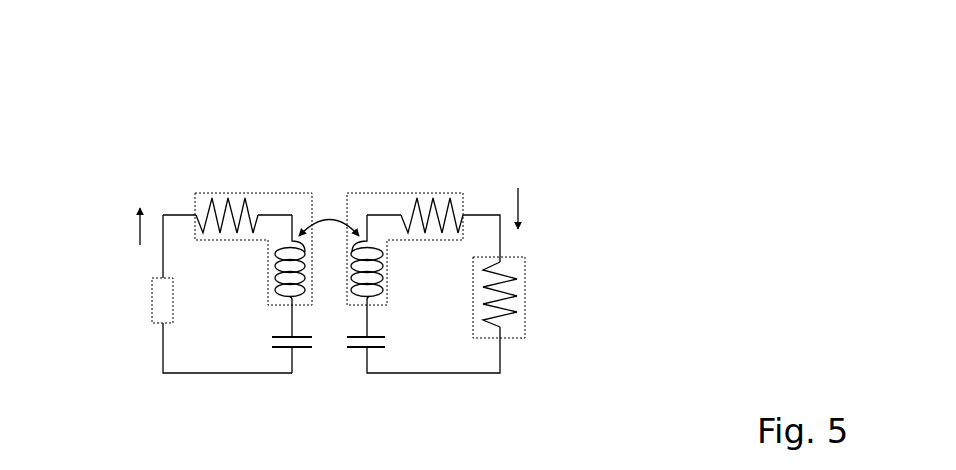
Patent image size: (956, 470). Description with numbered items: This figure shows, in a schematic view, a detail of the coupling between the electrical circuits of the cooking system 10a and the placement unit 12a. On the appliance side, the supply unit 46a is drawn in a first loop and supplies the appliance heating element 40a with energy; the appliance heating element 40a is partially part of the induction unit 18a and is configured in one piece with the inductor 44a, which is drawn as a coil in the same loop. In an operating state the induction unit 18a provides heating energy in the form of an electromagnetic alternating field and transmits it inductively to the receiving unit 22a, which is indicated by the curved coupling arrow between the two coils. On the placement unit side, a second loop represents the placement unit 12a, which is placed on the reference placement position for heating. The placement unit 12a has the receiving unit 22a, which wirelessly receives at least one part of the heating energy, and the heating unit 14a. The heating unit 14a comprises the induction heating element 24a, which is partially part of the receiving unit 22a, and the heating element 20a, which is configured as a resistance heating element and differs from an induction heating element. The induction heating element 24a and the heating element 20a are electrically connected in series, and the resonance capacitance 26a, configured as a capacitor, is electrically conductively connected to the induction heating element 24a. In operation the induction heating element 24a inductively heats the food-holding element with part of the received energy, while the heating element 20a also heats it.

The cooking system 10a is at (590, 106).
The placement unit 12a is at (576, 262).
The heating unit 14a is at (522, 150).
The induction unit 18a is at (209, 181).
The heating element 20a is at (525, 310).
The receiving unit 22a is at (403, 193).
The induction heating element 24a is at (443, 140).
The resonance capacitance 26a is at (350, 349).
The appliance heating element 40a is at (277, 193).
The inductor 44a is at (343, 223).
The supply unit 46a is at (152, 292).